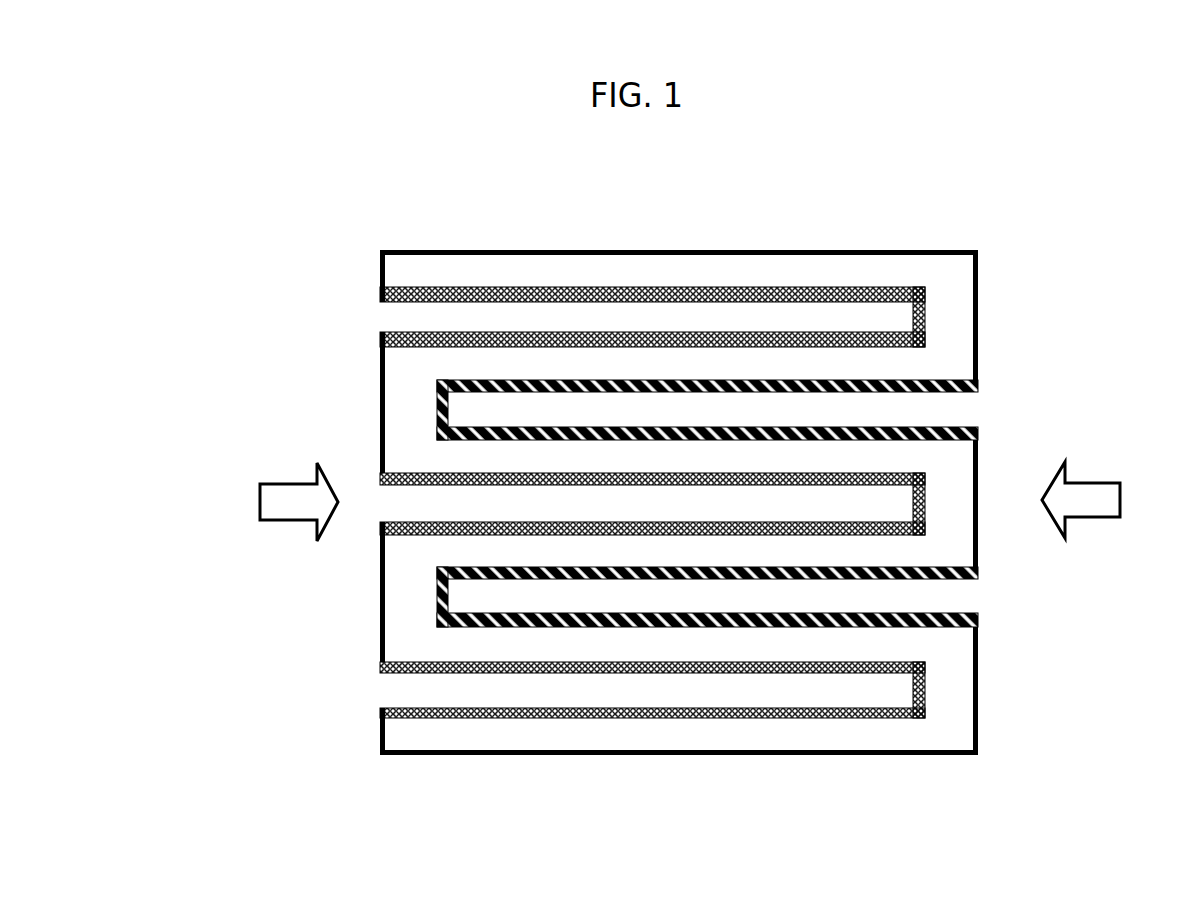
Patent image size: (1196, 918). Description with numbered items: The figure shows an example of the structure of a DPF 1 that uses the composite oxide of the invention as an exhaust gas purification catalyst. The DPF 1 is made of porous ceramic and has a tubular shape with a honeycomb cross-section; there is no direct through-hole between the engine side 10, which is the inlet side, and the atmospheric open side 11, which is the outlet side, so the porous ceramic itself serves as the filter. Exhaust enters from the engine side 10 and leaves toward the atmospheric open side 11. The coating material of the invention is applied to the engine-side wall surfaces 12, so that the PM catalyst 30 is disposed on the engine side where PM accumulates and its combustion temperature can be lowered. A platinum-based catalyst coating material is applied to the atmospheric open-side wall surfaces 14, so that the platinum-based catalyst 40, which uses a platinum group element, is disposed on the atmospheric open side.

The DPF 1 is at (276, 248).
The engine side 10 is at (275, 502).
The atmospheric open side 11 is at (1117, 500).
The engine-side wall surface 12 is at (420, 348).
The atmospheric open-side wall surface 14 is at (922, 380).
The PM catalyst 30 is at (390, 672).
The platinum-based catalyst 40 is at (958, 575).